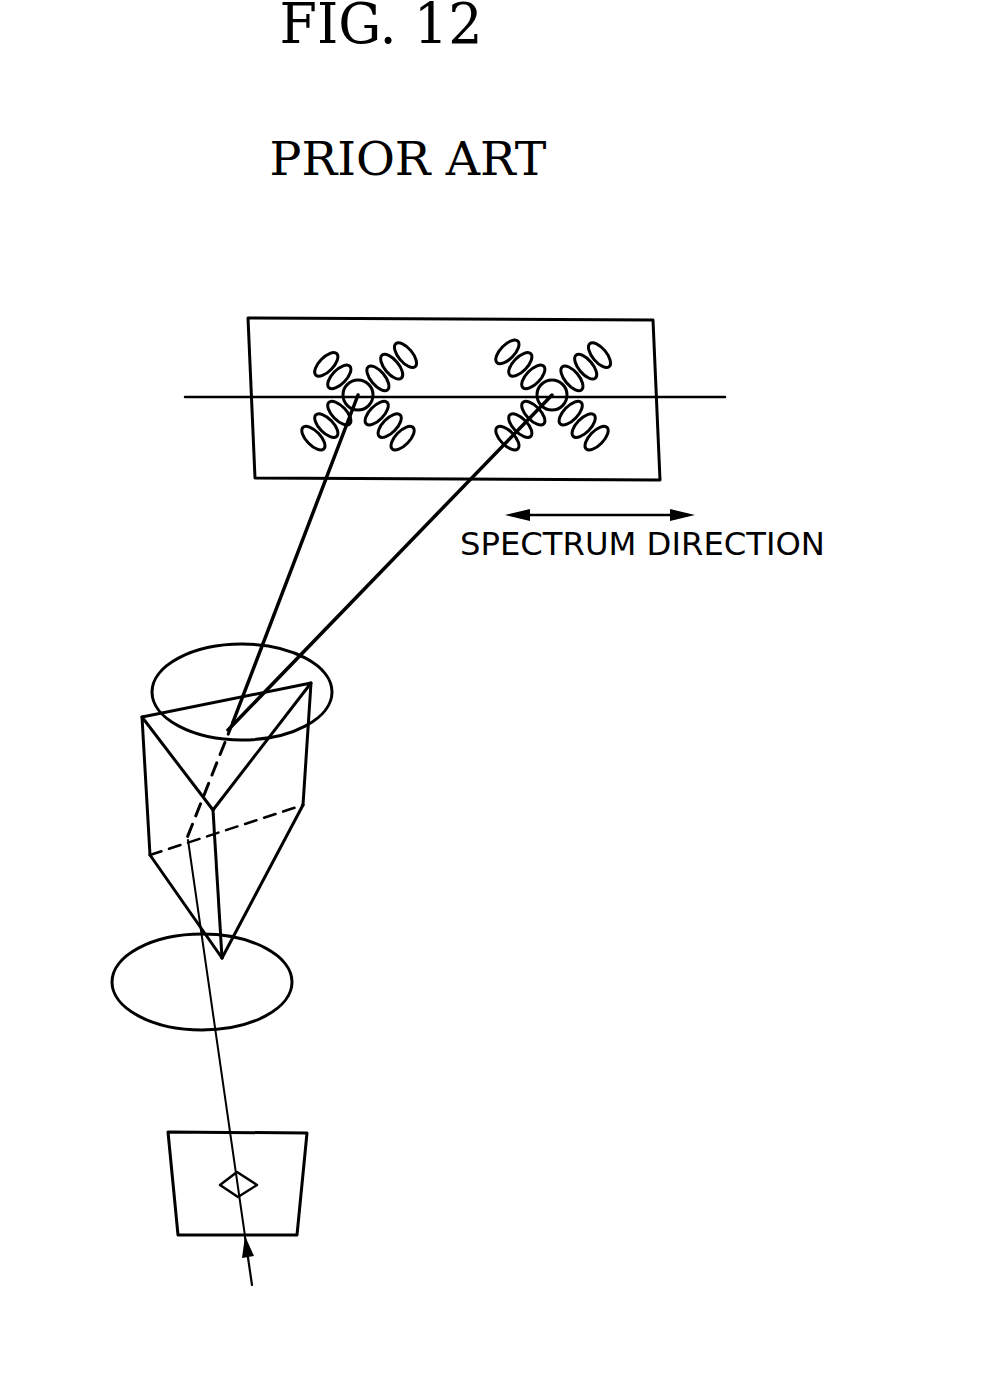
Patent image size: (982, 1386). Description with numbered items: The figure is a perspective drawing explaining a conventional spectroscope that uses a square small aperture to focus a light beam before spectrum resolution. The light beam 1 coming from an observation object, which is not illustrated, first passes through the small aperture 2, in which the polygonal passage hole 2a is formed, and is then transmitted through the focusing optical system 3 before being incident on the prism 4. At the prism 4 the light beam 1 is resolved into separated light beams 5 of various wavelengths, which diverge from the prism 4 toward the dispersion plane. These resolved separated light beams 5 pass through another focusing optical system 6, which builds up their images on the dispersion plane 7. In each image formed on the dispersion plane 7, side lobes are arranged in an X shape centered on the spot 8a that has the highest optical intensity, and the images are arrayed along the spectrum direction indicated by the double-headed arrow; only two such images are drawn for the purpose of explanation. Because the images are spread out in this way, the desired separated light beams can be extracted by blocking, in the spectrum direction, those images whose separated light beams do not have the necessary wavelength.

The light beam 1 is at (252, 1270).
The small aperture 2 is at (193, 1158).
The polygonal passage hole 2a is at (252, 1180).
The focusing optical system 3 is at (272, 992).
The prism 4 is at (160, 783).
The separated light beams 5 is at (289, 560).
The focusing optical system 6 is at (183, 667).
The dispersion plane 7 is at (450, 332).
The spot 8a is at (358, 381).